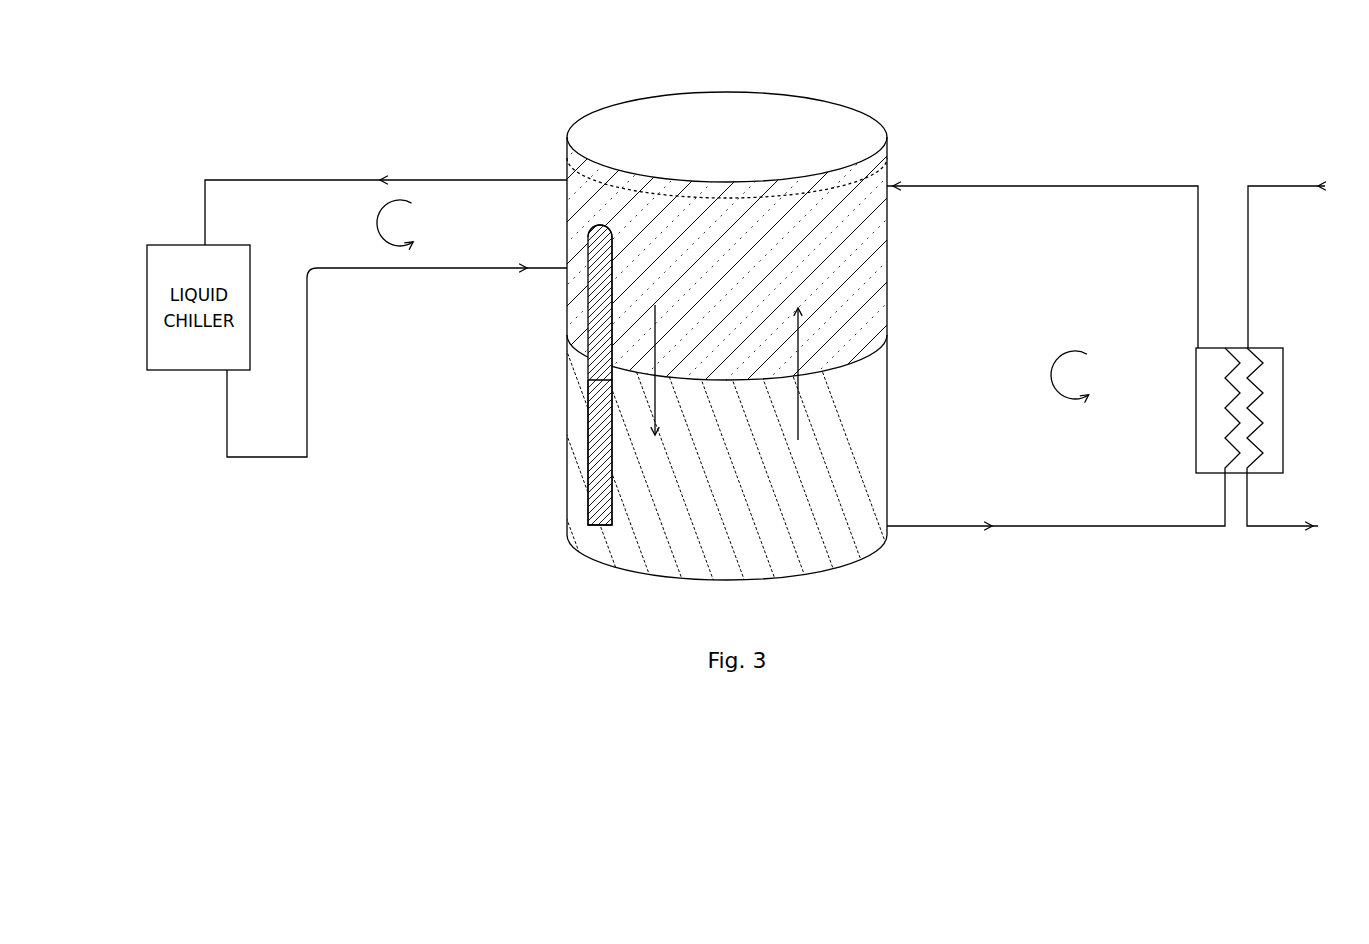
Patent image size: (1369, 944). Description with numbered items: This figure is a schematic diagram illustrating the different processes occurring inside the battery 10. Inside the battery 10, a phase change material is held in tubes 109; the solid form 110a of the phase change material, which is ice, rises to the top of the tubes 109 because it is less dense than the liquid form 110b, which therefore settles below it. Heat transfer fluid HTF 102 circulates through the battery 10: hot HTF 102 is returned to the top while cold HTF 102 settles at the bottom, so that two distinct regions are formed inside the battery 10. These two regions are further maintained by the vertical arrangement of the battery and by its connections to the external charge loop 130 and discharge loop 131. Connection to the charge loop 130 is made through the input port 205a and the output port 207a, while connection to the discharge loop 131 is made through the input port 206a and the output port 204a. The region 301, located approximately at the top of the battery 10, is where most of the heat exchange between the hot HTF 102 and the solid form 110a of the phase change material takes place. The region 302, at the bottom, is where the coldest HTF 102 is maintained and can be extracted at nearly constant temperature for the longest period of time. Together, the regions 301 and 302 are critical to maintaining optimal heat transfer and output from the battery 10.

The battery 10 is at (718, 350).
The HTF 102 is at (642, 543).
The tubes 109 is at (566, 528).
The solid form of PCM 110a is at (595, 282).
The liquid form of PCM 110b is at (582, 430).
The charge loop 130 is at (407, 225).
The discharge loop 131 is at (1086, 377).
The output port 204a is at (940, 527).
The input port 205a is at (455, 270).
The input port 206a is at (950, 186).
The output port 207a is at (473, 180).
The region 301 is at (848, 292).
The region 302 is at (828, 466).